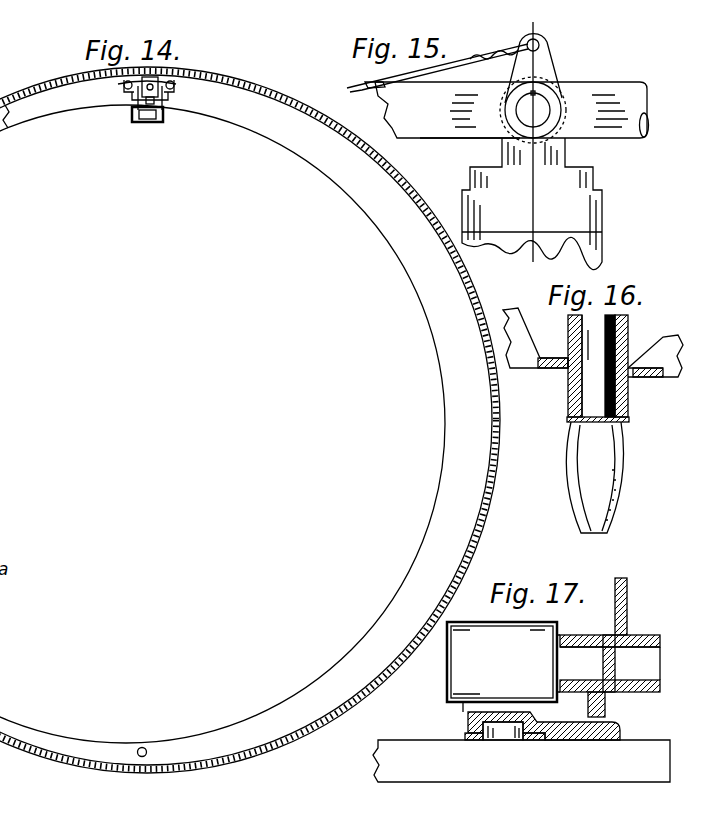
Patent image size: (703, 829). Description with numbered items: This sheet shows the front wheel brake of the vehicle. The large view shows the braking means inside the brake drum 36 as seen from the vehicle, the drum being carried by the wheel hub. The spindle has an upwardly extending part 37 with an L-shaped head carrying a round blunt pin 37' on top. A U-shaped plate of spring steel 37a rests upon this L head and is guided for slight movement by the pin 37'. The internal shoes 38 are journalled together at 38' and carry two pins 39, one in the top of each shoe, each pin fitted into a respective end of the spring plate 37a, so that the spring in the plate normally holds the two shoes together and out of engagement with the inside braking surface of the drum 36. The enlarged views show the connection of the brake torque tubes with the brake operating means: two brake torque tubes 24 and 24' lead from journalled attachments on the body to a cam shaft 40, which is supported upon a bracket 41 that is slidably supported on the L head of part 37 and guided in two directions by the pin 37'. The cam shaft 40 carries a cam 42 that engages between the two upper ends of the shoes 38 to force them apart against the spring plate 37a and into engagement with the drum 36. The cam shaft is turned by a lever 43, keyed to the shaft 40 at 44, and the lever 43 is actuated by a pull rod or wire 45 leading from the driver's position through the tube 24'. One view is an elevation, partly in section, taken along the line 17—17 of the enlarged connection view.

In FIG. 15, the section line 17 is at (548, 50).
In FIG. 15, the brake torque tube 24 is at (512, 92).
In FIG. 16, the brake torque tube 24 is at (535, 338).
In FIG. 15, the brake torque tube 24' is at (511, 125).
In FIG. 16, the brake torque tube 24' is at (655, 356).
In FIG. 14, the brake drum 36 is at (480, 547).
In FIG. 14, the upwardly extending part 37 is at (154, 128).
In FIG. 17, the upwardly extending part 37 is at (521, 775).
In FIG. 17, the round blunt pin 37' is at (501, 744).
In FIG. 14, the U-shaped spring steel plate 37a is at (135, 101).
In FIG. 17, the U-shaped spring steel plate 37a is at (466, 737).
In FIG. 14, the internal shoes 38 is at (222, 424).
In FIG. 14, the shoe journal 38' is at (159, 734).
In FIG. 14, the pins 39 is at (198, 72).
In FIG. 16, the cam shaft 40 is at (600, 338).
In FIG. 17, the cam shaft 40 is at (648, 670).
In FIG. 16, the bracket 41 is at (621, 410).
In FIG. 17, the bracket 41 is at (620, 728).
In FIG. 14, the cam 42 is at (127, 86).
In FIG. 16, the cam 42 is at (620, 487).
In FIG. 17, the cam 42 is at (549, 635).
In FIG. 15, the lever 43 is at (555, 72).
In FIG. 17, the lever 43 is at (628, 618).
In FIG. 17, the keying point 44 is at (661, 642).
In FIG. 15, the pull rod or wire 45 is at (480, 52).